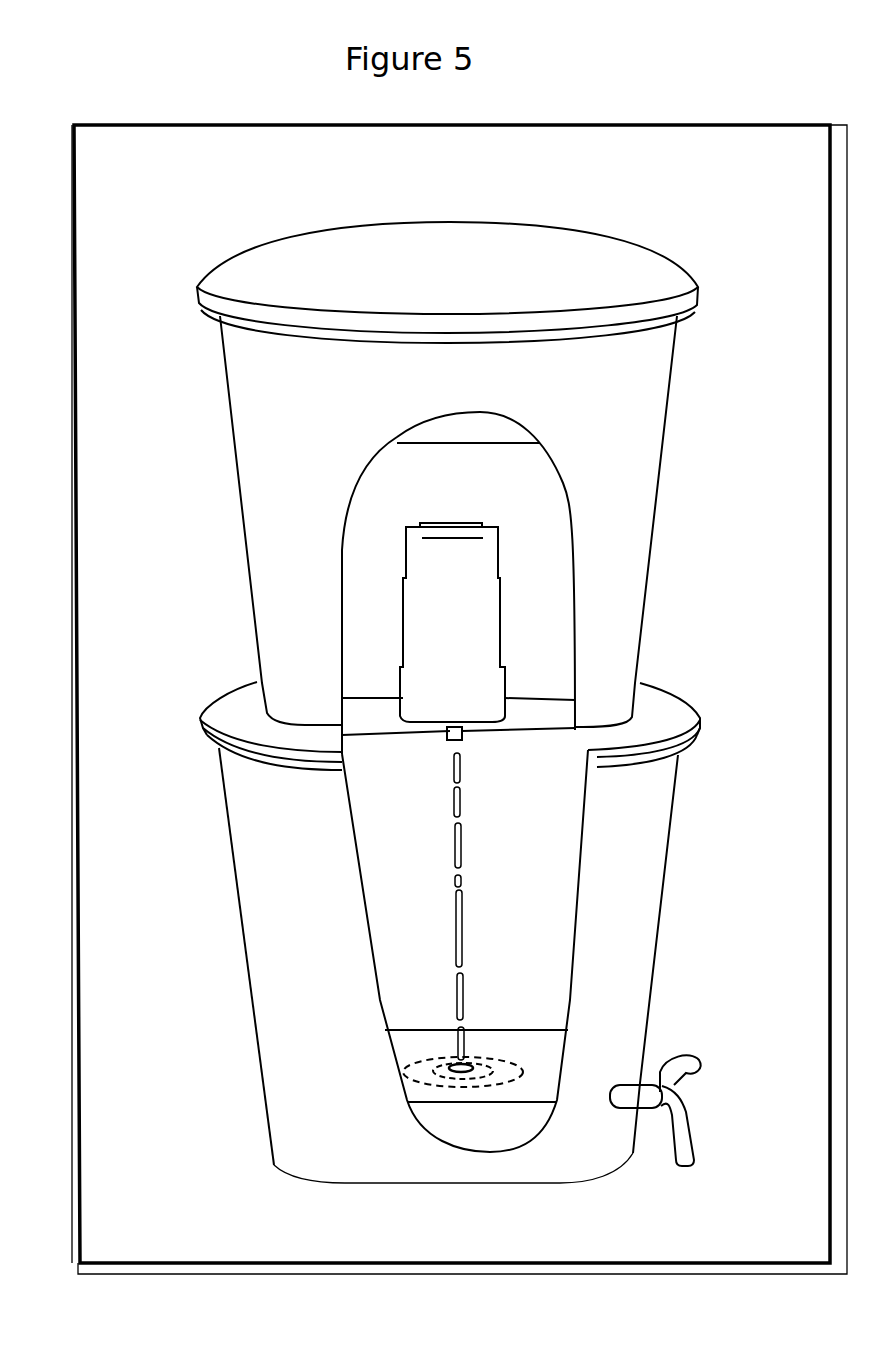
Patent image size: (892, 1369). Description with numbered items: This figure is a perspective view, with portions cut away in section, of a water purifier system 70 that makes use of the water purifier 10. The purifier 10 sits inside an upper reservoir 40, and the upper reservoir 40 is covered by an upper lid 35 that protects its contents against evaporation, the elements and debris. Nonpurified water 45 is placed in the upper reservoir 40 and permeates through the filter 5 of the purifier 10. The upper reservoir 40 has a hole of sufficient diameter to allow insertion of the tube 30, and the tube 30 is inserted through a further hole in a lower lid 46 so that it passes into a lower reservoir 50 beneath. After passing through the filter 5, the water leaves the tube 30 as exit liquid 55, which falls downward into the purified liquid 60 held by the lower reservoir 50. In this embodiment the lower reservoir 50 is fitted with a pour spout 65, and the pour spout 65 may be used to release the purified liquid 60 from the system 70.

The filter 5 is at (505, 615).
The water purifier 10 is at (426, 510).
The tube 30 is at (467, 733).
The upper lid 35 is at (633, 240).
The upper reservoir 40 is at (665, 450).
The nonpurified water 45 is at (523, 475).
The lower lid 46 is at (670, 690).
The lower reservoir 50 is at (668, 865).
The exit liquid 55 is at (463, 800).
The purified liquid 60 is at (532, 1047).
The pour spout 65 is at (700, 1098).
The water purifier system 70 is at (197, 482).